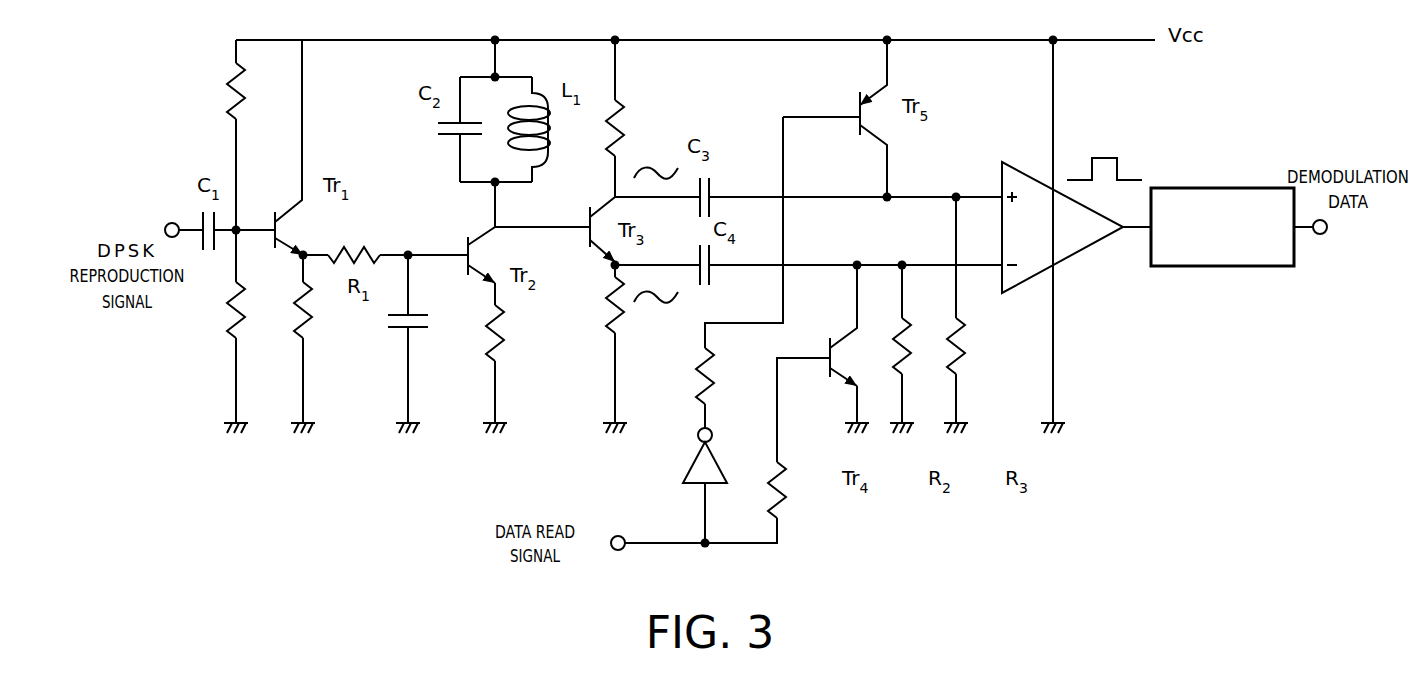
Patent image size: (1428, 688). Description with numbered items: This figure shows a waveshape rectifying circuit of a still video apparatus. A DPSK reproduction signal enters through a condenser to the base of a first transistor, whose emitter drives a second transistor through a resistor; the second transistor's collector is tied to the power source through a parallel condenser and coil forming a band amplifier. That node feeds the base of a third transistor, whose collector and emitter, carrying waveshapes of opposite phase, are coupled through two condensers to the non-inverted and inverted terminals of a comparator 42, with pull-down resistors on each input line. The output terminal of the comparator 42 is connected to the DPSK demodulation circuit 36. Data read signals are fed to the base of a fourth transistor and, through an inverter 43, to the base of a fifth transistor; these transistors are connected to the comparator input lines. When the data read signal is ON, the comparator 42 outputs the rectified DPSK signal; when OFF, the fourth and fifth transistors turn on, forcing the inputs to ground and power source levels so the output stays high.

The DPSK demodulation circuit 36 is at (1192, 188).
The comparator 42 is at (1082, 252).
The inverter 43 is at (693, 457).